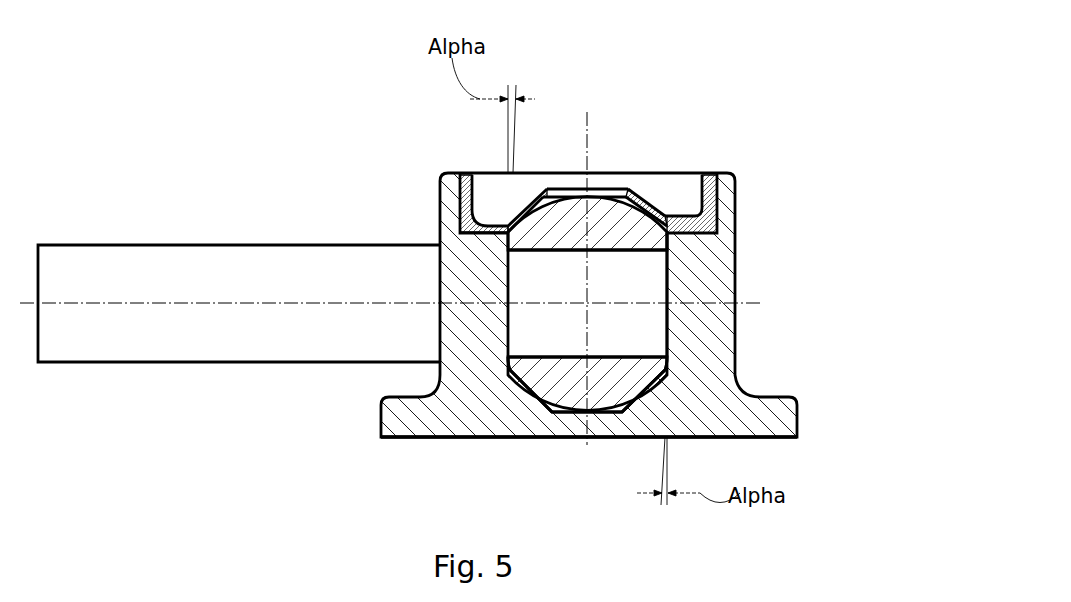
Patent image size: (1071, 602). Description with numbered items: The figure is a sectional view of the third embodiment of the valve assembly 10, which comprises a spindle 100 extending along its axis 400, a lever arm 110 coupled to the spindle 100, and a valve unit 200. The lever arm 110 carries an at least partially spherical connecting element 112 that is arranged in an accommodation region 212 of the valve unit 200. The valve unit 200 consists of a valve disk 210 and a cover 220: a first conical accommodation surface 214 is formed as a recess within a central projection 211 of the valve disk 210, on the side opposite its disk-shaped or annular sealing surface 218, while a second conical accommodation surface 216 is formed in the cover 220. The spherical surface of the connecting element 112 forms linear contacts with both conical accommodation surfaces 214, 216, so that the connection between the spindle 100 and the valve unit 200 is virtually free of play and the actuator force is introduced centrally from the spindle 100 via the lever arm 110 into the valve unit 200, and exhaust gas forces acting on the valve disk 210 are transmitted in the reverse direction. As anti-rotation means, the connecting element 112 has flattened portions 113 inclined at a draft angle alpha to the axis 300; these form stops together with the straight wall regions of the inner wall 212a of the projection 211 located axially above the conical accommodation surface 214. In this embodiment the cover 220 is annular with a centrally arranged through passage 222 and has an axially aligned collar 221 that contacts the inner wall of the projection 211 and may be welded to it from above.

The valve assembly 10 is at (848, 140).
The spindle 100 is at (172, 243).
The axis of spindle 400 is at (243, 302).
The axis 300 is at (587, 112).
The lever arm 110 is at (590, 317).
The connecting element 112 is at (568, 220).
The flattened portion 113 is at (508, 360).
The valve unit 200 is at (812, 219).
The valve disk 210 is at (812, 420).
The projection 211 is at (725, 312).
The accommodation region 212 is at (669, 205).
The inner wall of projection 212a is at (663, 292).
The first conical accommodation surface 214 is at (655, 380).
The second conical accommodation surface 216 is at (541, 213).
The sealing surface 218 is at (400, 437).
The cover 220 is at (646, 177).
The collar 221 is at (717, 195).
The through passage 222 is at (610, 189).